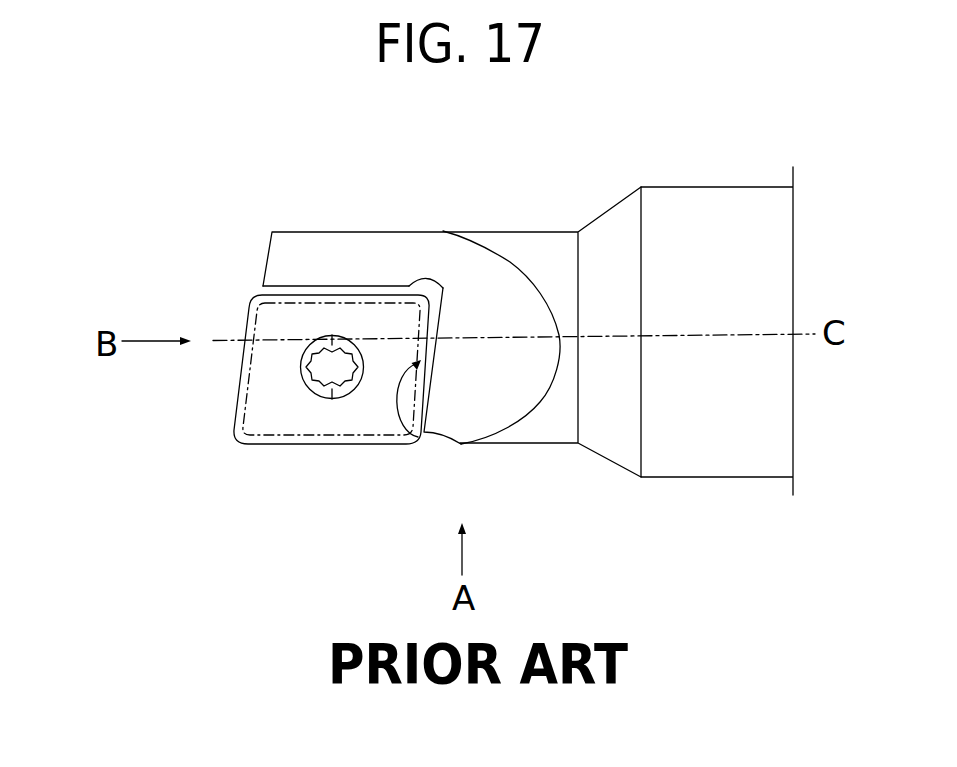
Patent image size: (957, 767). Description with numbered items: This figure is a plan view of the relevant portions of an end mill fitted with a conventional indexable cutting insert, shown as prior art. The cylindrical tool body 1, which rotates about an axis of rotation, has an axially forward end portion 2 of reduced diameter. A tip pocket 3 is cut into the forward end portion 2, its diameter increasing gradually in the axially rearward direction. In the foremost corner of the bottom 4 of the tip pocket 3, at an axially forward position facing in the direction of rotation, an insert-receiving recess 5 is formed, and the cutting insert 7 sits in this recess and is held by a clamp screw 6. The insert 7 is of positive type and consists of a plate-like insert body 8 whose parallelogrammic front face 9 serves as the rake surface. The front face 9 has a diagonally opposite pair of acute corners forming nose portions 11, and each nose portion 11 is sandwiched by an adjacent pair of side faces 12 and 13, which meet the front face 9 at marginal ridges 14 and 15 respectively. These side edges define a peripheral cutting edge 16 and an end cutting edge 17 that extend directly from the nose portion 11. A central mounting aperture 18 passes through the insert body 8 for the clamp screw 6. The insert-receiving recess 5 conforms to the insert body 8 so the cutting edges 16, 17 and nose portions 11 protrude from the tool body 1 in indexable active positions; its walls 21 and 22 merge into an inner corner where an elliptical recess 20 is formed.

The tool body 1 is at (707, 202).
The forward end portion 2 is at (503, 208).
The tip pocket 3 is at (530, 297).
The bottom 4 is at (358, 253).
The insert-receiving recess 5 is at (395, 452).
The clamp screw 6 is at (365, 351).
The cutting insert 7 is at (328, 475).
The insert body 8 is at (376, 451).
The front face 9 is at (290, 417).
The nose portion 11 is at (442, 283).
The side face 12 is at (390, 283).
The side face 13 is at (436, 381).
The marginal ridge 14 is at (302, 452).
The marginal ridge 15 is at (227, 409).
The peripheral cutting edge 16 is at (276, 458).
The end cutting edge 17 is at (223, 426).
The central mounting aperture 18 is at (301, 380).
The recess 20 is at (450, 307).
The wall 21 is at (327, 300).
The wall 22 is at (421, 435).